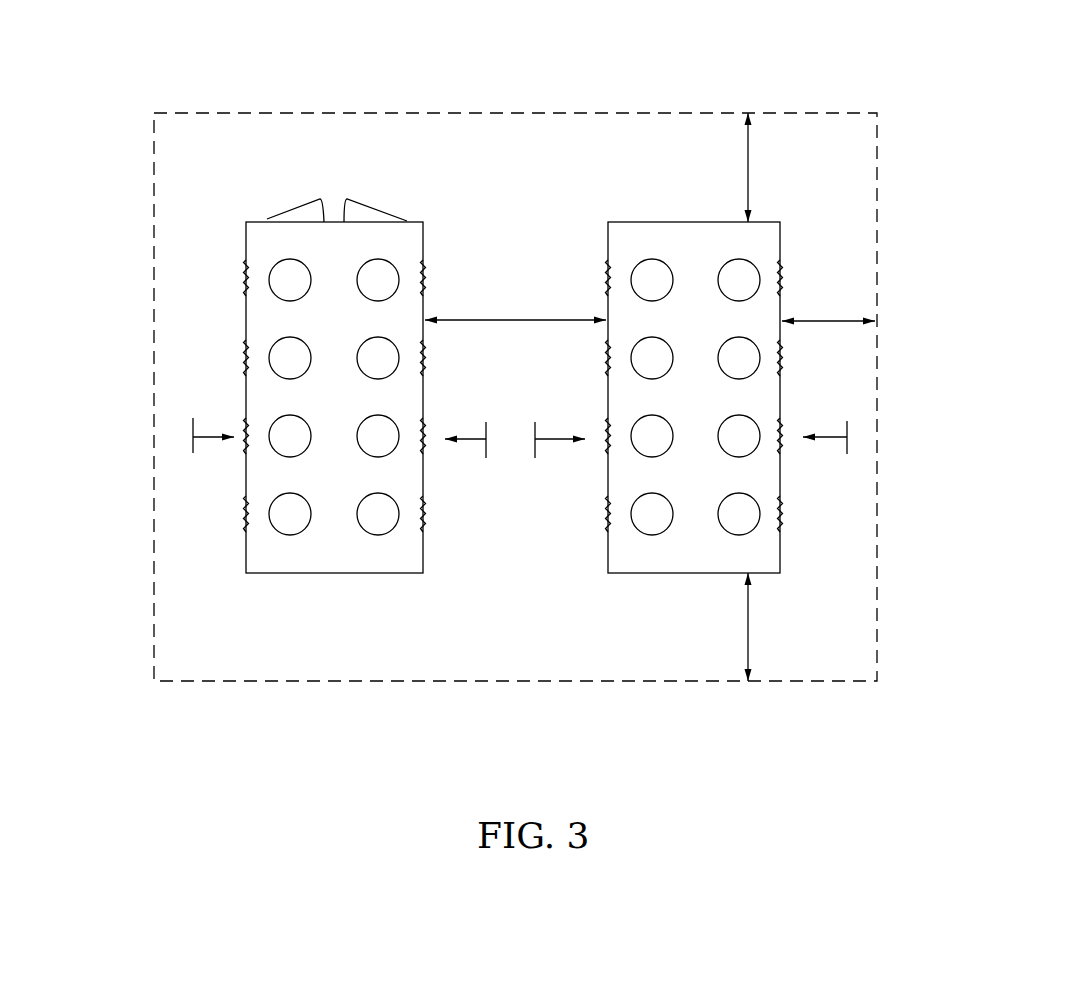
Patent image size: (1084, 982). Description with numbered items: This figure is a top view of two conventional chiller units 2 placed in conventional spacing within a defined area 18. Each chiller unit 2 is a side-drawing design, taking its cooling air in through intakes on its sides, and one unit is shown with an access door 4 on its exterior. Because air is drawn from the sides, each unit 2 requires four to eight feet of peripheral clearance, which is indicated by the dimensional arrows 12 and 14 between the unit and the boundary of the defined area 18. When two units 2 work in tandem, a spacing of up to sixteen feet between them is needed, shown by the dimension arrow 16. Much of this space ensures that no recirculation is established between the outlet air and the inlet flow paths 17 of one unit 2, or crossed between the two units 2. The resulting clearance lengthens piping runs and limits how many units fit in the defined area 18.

The chiller unit 2 is at (300, 573).
The access door 4 is at (379, 213).
The dimensional arrow 12 is at (748, 168).
The dimensional arrow 14 is at (830, 321).
The dimension arrow 16 is at (515, 320).
The inlet flow paths 17 is at (190, 437).
The defined area 18 is at (178, 530).